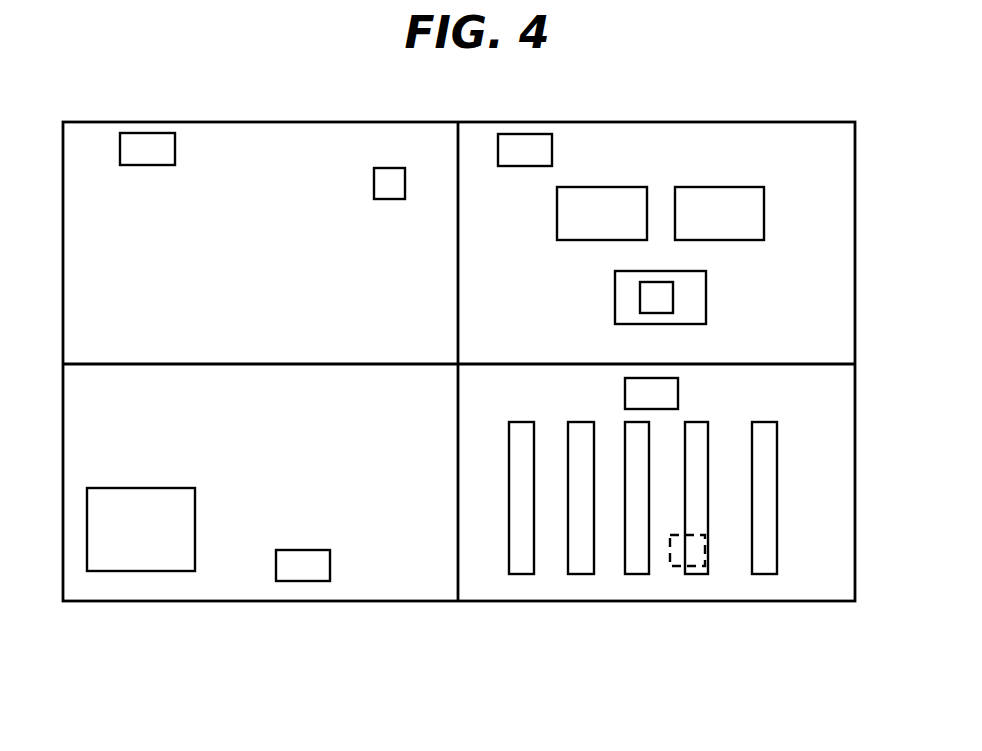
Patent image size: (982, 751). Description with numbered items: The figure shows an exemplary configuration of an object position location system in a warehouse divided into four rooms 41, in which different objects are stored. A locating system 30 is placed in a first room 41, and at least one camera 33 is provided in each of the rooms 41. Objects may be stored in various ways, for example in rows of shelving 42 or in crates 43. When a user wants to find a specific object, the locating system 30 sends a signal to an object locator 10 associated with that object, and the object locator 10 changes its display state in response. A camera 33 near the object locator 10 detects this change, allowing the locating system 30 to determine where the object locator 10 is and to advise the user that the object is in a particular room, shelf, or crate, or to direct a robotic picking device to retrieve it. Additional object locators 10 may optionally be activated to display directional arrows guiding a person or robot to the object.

The object locator 10 is at (388, 199).
The locating system 30 is at (195, 514).
The camera 33 is at (175, 150).
The room 41 is at (287, 140).
The shelving 42 is at (777, 538).
The crate 43 is at (706, 297).